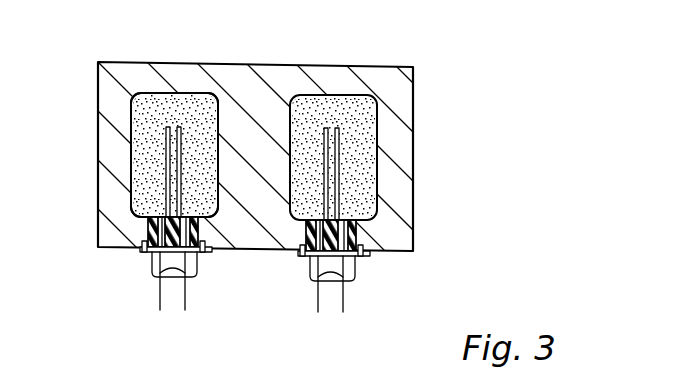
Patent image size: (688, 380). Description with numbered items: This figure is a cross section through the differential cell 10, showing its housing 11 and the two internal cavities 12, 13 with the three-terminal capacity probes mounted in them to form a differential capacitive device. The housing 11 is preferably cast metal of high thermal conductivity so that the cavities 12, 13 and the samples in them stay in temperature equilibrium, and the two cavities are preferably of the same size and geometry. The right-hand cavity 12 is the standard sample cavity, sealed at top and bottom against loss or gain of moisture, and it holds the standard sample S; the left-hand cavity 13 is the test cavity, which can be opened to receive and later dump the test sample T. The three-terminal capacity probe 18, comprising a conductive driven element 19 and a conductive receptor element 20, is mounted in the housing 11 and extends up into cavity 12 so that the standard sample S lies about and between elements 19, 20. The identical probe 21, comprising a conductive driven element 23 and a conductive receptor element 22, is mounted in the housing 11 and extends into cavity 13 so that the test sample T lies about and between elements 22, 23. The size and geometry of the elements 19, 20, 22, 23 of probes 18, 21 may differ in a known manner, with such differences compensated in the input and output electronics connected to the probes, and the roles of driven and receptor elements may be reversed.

The differential cell 10 is at (344, 190).
The housing 11 is at (369, 77).
The standard sample cavity 12 is at (363, 112).
The test cavity 13 is at (171, 96).
The three-terminal capacity probe 18 is at (360, 286).
The conductive driven element 19 is at (326, 187).
The conductive receptor element 20 is at (336, 168).
The three-terminal capacity probe 21 is at (197, 284).
The conductive receptor element 22 is at (188, 182).
The conductive driven element 23 is at (170, 132).
The test sample T is at (148, 182).
The standard sample S is at (362, 195).